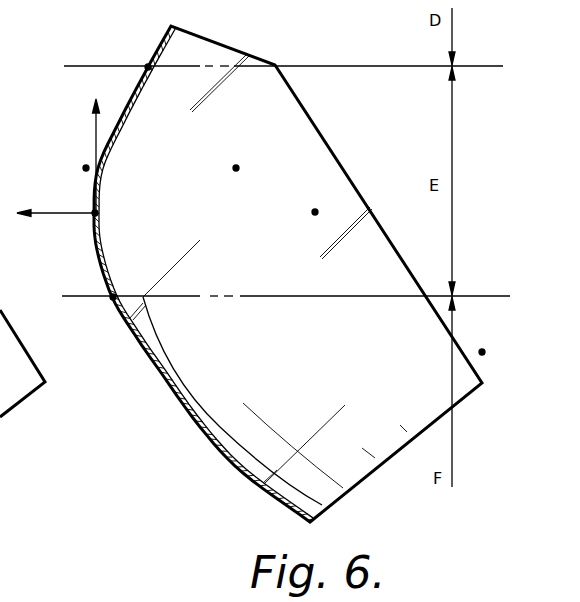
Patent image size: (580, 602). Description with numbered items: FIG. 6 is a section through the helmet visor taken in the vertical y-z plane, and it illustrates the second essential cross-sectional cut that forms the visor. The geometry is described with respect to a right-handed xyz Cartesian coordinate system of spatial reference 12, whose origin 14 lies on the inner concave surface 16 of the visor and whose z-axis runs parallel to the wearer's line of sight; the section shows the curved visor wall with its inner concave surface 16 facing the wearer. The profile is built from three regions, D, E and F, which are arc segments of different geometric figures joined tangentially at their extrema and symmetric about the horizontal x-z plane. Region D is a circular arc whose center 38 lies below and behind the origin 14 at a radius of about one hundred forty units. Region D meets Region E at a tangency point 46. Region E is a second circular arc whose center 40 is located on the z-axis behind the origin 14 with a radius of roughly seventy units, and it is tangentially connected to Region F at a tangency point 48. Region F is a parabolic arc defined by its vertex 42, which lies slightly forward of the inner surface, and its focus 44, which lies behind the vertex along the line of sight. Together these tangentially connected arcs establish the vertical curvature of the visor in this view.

The coordinate system of spatial reference 12 is at (80, 228).
The origin 14 is at (97, 213).
The inner concave surface 16 is at (202, 423).
The center 38 is at (483, 350).
The center 40 is at (313, 214).
The vertex 42 is at (84, 166).
The focus 44 is at (237, 166).
The tangency point 46 is at (147, 65).
The tangency point 48 is at (112, 299).